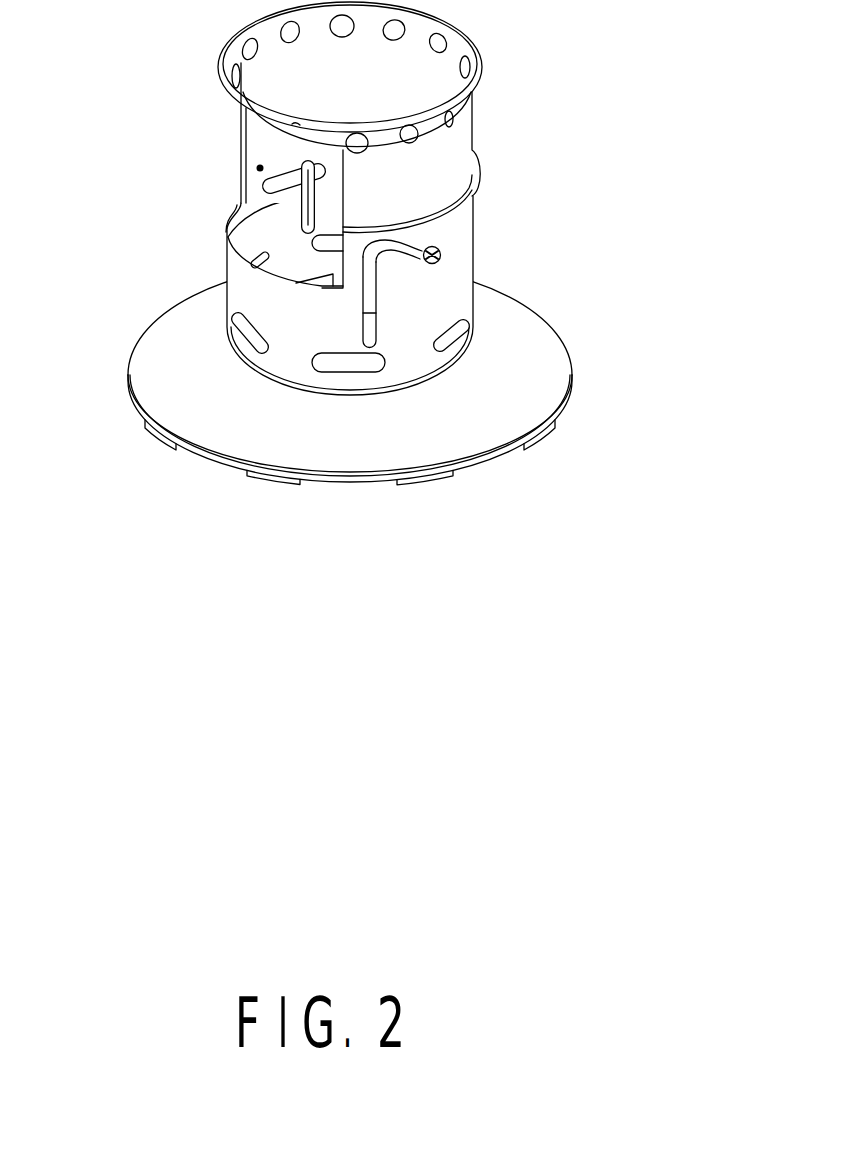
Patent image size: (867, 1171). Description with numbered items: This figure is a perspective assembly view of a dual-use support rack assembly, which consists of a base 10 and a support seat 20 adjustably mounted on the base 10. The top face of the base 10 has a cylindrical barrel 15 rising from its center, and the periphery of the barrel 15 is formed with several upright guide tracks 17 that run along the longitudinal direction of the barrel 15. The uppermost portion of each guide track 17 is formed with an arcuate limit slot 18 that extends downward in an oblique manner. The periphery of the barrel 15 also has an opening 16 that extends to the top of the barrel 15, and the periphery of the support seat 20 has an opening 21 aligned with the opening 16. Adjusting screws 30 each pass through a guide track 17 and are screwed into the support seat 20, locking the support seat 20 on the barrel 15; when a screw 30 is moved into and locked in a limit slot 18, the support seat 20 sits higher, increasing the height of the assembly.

The base 10 is at (543, 382).
The cylindrical barrel 15 is at (247, 303).
The opening 16 is at (227, 263).
The upright guide track 17 is at (368, 290).
The arcuate limit slot 18 is at (418, 248).
The support seat 20 is at (460, 127).
The opening 21 is at (242, 140).
The adjusting screw 30 is at (440, 255).